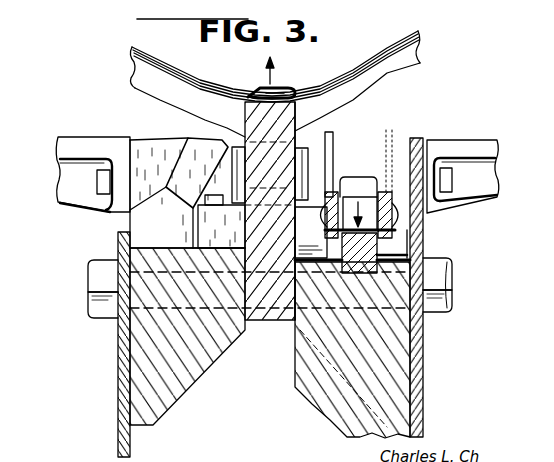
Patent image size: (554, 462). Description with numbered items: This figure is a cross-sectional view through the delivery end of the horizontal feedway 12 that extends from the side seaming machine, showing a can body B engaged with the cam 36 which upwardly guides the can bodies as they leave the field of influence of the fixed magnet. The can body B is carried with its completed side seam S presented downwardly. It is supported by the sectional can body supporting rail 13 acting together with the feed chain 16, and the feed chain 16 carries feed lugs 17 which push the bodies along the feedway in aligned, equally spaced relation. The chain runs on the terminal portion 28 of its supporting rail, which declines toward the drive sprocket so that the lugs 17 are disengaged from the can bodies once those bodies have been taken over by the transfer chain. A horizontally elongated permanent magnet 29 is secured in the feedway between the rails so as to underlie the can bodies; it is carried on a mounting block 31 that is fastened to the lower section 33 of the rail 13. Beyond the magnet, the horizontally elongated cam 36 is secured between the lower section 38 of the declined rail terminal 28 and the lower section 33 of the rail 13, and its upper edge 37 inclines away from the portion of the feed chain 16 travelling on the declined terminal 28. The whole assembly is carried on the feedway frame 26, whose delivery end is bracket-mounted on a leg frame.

The can body B is at (135, 68).
The side seam S is at (286, 85).
The feedway 12 is at (181, 132).
The can body supporting rail 13 is at (158, 271).
The feed chain 16 is at (400, 230).
The feed lug 17 is at (333, 140).
The feedway frame 26 is at (118, 407).
The terminal portion of the rail 28 is at (392, 353).
The permanent magnet 29 is at (302, 175).
The mounting block 31 is at (217, 218).
The lower section of the rail 33 is at (188, 386).
The cam 36 is at (266, 134).
The upper edge of the cam 37 is at (295, 118).
The lower section of the rail terminal 38 is at (327, 396).